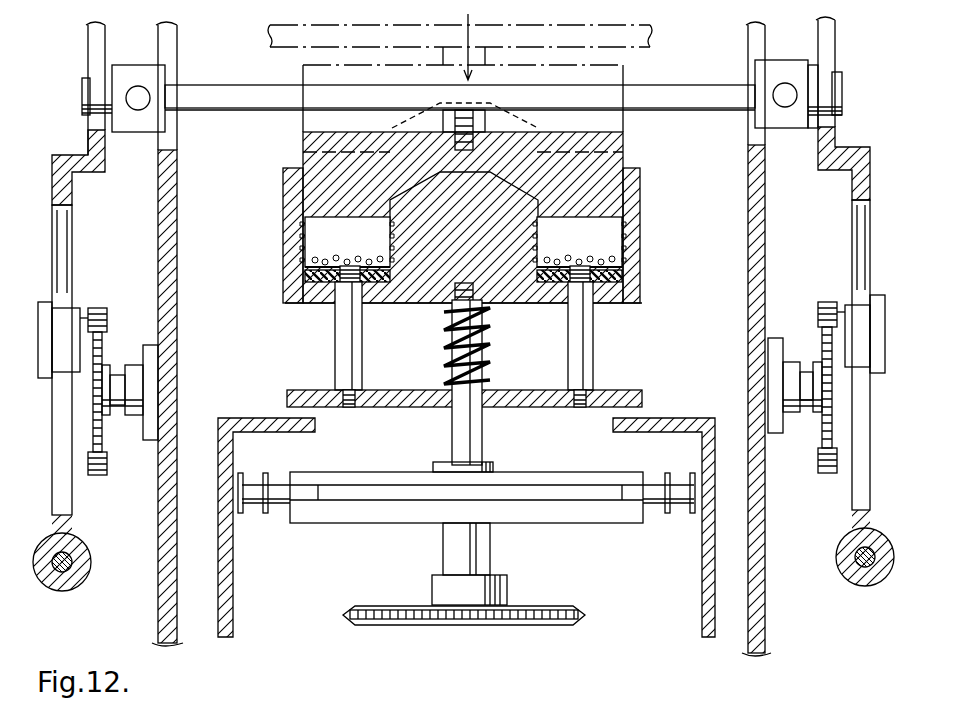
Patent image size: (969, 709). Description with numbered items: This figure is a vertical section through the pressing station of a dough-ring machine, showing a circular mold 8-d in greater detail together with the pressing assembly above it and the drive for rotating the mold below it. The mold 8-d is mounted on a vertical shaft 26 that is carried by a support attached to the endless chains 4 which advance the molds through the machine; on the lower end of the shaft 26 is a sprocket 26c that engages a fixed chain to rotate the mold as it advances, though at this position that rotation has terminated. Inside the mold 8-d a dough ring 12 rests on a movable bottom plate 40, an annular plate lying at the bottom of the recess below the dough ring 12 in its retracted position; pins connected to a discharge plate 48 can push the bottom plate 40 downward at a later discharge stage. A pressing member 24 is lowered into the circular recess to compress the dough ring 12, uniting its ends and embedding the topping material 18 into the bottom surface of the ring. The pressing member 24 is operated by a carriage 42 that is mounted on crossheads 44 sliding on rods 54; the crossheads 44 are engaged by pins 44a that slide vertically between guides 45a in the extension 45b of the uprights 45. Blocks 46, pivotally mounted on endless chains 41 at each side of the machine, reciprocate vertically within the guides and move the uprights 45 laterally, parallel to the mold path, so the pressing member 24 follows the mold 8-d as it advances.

The endless chains 4 is at (258, 505).
The mold 8-d is at (640, 200).
The dough ring 12 is at (642, 245).
The topping material 18 is at (595, 285).
The pressing member 24 is at (622, 156).
The vertical shaft 26 is at (478, 438).
The sprocket 26c is at (403, 625).
The bottom plate 40 is at (292, 280).
The endless chains 41 is at (102, 438).
The carriage 42 is at (213, 102).
The crossheads 44 is at (130, 73).
The pins 44a is at (82, 113).
The uprights 45 is at (850, 498).
The guides 45a is at (102, 124).
The extension 45b is at (833, 52).
The blocks 46 is at (72, 313).
The discharge plate 48 is at (827, 330).
The rods 54 is at (146, 91).